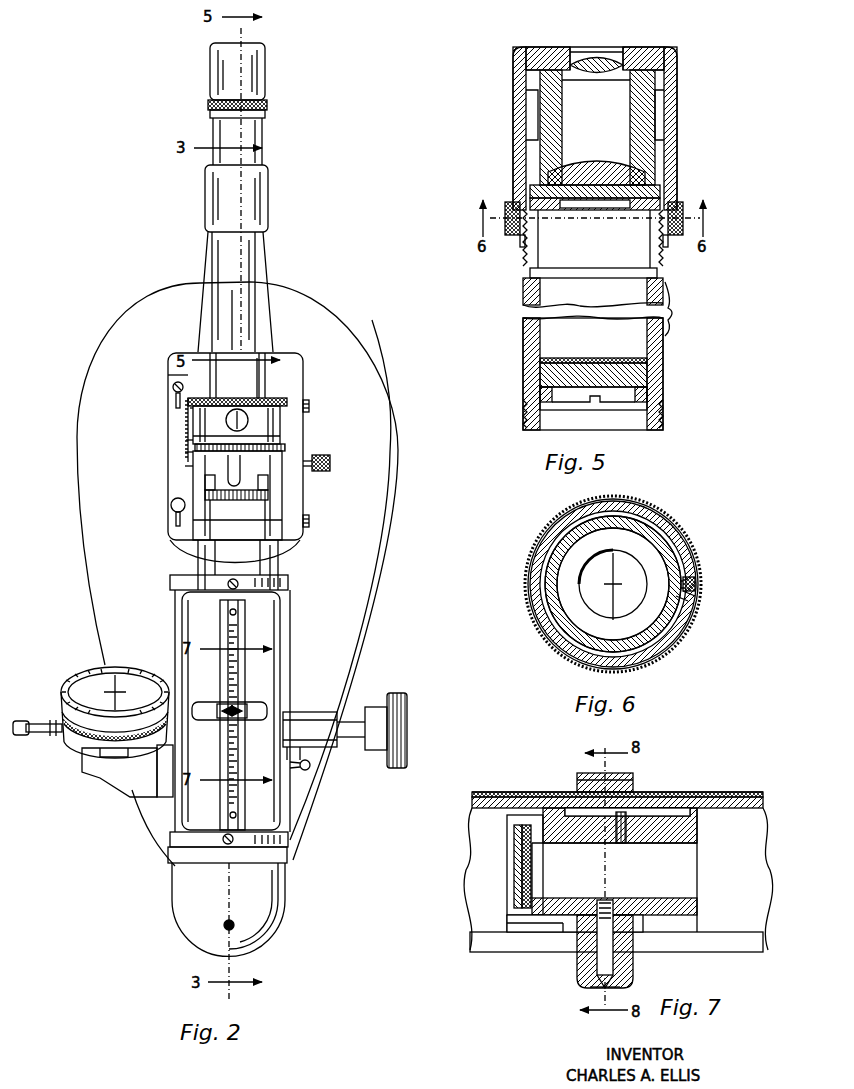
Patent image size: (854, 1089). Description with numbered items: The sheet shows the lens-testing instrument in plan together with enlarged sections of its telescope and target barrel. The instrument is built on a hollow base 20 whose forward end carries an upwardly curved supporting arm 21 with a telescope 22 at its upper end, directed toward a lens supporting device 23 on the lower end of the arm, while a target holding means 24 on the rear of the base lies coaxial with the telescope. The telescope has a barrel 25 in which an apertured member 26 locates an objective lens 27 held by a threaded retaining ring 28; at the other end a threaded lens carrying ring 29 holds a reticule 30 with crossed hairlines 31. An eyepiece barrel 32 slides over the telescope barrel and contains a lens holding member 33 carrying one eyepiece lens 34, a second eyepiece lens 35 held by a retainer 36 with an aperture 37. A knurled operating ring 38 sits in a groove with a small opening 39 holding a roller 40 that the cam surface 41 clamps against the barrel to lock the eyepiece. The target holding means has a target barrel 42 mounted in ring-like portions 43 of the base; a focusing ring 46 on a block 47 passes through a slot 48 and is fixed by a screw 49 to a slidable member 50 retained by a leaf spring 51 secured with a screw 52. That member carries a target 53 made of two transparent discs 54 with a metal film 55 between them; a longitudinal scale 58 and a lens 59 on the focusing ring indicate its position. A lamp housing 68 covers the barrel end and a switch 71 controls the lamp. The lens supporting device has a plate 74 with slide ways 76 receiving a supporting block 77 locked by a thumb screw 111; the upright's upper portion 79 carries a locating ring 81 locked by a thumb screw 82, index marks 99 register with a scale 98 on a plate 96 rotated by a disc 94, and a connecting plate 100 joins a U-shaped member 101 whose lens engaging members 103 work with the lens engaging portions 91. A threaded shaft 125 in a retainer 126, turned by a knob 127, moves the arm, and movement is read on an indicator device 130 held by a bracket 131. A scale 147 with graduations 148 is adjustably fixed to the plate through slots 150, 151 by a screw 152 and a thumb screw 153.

In FIG. 2, the hollow base 20 is at (368, 530).
In FIG. 2, the supporting arm 21 is at (269, 205).
In FIG. 2, the telescope 22 is at (248, 255).
In FIG. 5, the telescope 22 is at (688, 308).
In FIG. 2, the lens supporting device 23 is at (293, 433).
In FIG. 7, the target holding means 24 is at (718, 791).
In FIG. 2, the telescope barrel 25 is at (250, 305).
In FIG. 5, the telescope barrel 25 is at (655, 347).
In FIG. 6, the telescope barrel 25 is at (645, 530).
In FIG. 5, the apertured member 26 is at (642, 359).
In FIG. 5, the objective lens 27 is at (650, 376).
In FIG. 5, the retaining ring 28 is at (625, 403).
In FIG. 5, the lens carrying ring 29 is at (664, 182).
In FIG. 6, the lens carrying ring 29 is at (645, 555).
In FIG. 5, the reticule 30 is at (636, 199).
In FIG. 6, the reticule 30 is at (630, 566).
In FIG. 6, the crossed hairlines 31 is at (615, 578).
In FIG. 2, the eyepiece barrel 32 is at (266, 97).
In FIG. 5, the eyepiece barrel 32 is at (677, 86).
In FIG. 6, the eyepiece barrel 32 is at (645, 520).
In FIG. 5, the lens holding member 33 is at (642, 124).
In FIG. 5, the eyepiece lens 34 is at (637, 167).
In FIG. 5, the second eyepiece lens 35 is at (585, 58).
In FIG. 5, the retainer 36 is at (638, 52).
In FIG. 5, the aperture 37 is at (598, 55).
In FIG. 5, the knurled operating ring 38 is at (683, 207).
In FIG. 6, the knurled operating ring 38 is at (692, 576).
In FIG. 6, the opening 39 is at (688, 600).
In FIG. 5, the roller 40 is at (678, 242).
In FIG. 6, the roller 40 is at (697, 585).
In FIG. 6, the cam surface 41 is at (697, 595).
In FIG. 2, the target barrel 42 is at (256, 683).
In FIG. 7, the target barrel 42 is at (765, 800).
In FIG. 2, the ring-like upwardly extending portions 43 is at (286, 583).
In FIG. 7, the focusing ring 46 is at (632, 790).
In FIG. 7, the block 47 is at (636, 961).
In FIG. 7, the longitudinal slot 48 is at (725, 946).
In FIG. 7, the screw 49 is at (592, 986).
In FIG. 7, the slidable member 50 is at (700, 906).
In FIG. 7, the leaf spring 51 is at (645, 812).
In FIG. 7, the screw 52 is at (624, 845).
In FIG. 7, the target 53 is at (505, 876).
In FIG. 7, the transparent discs 54 is at (524, 853).
In FIG. 7, the metal film 55 is at (533, 871).
In FIG. 2, the longitudinal scale 58 is at (240, 804).
In FIG. 7, the longitudinal scale 58 is at (520, 790).
In FIG. 2, the lens 59 is at (210, 703).
In FIG. 7, the lens 59 is at (590, 772).
In FIG. 2, the lamp housing 68 is at (268, 913).
In FIG. 2, the switch 71 is at (309, 768).
In FIG. 2, the plate 74 is at (305, 383).
In FIG. 2, the slide ways 76 is at (266, 379).
In FIG. 2, the supporting block 77 is at (277, 513).
In FIG. 2, the upper end portion 79 is at (190, 440).
In FIG. 2, the locating ring 81 is at (190, 408).
In FIG. 2, the thumb screw 82 is at (230, 426).
In FIG. 2, the lens engaging portions 91 is at (228, 480).
In FIG. 2, the disc 94 is at (173, 388).
In FIG. 2, the plate 96 is at (222, 465).
In FIG. 2, the scale 98 is at (190, 452).
In FIG. 2, the index marks 99 is at (282, 438).
In FIG. 2, the connecting plate 100 is at (262, 465).
In FIG. 2, the U-shaped member 101 is at (232, 503).
In FIG. 2, the lens engaging members 103 is at (269, 489).
In FIG. 2, the thumb screw 111 is at (332, 462).
In FIG. 2, the threaded shaft 125 is at (345, 713).
In FIG. 2, the retainer 126 is at (316, 750).
In FIG. 2, the knob 127 is at (407, 735).
In FIG. 2, the indicator device 130 is at (76, 672).
In FIG. 2, the bracket 131 is at (100, 778).
In FIG. 2, the scale 147 is at (186, 421).
In FIG. 2, the graduations 148 is at (190, 466).
In FIG. 2, the slot 150 is at (177, 397).
In FIG. 2, the slot 151 is at (173, 520).
In FIG. 2, the screw 152 is at (178, 378).
In FIG. 2, the thumb screw 153 is at (172, 513).